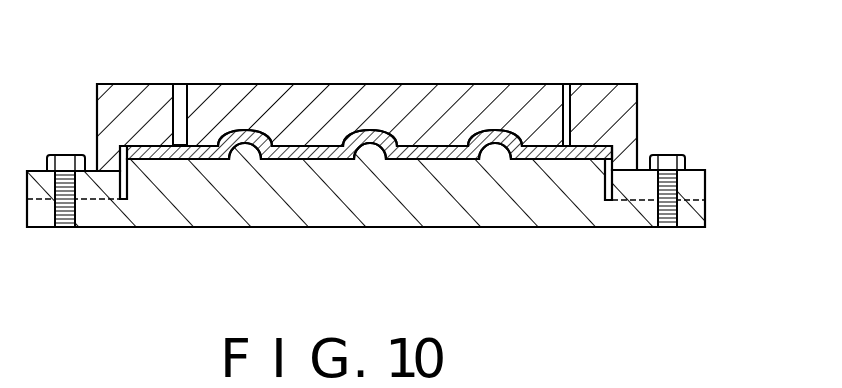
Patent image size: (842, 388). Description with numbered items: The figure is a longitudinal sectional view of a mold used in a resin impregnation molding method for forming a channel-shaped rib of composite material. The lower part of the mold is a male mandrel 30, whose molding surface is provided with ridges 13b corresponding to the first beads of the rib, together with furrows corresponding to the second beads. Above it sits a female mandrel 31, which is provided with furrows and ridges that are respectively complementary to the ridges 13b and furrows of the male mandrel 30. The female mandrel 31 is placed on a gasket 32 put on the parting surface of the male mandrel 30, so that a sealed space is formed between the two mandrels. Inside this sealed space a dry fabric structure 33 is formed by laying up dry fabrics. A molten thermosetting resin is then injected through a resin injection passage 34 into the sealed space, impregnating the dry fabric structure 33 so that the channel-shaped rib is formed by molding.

The male mandrel 30 is at (505, 203).
The female mandrel 31 is at (528, 93).
The gasket 32 is at (705, 178).
The dry fabric structure 33 is at (420, 148).
The resin injection passage 34 is at (172, 100).
The ridges 13b is at (247, 128).